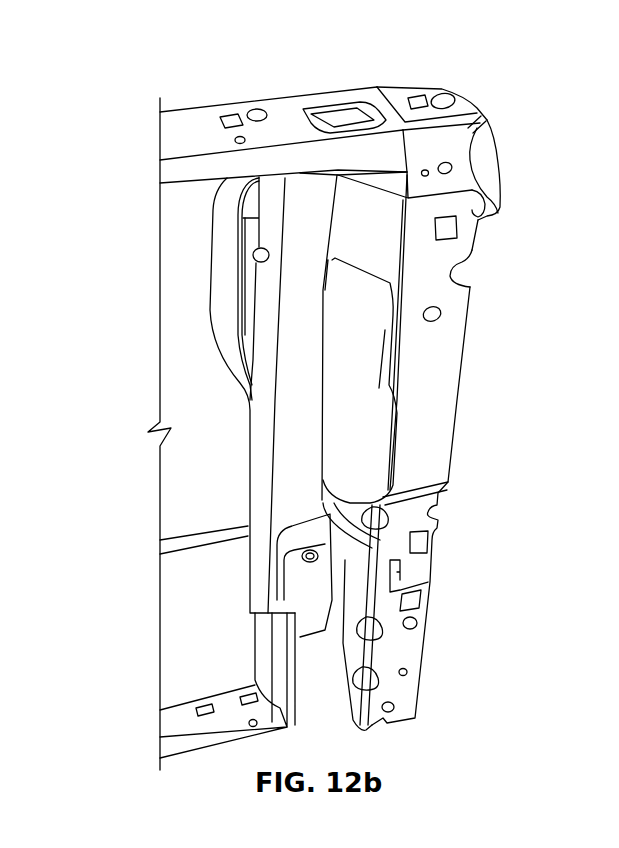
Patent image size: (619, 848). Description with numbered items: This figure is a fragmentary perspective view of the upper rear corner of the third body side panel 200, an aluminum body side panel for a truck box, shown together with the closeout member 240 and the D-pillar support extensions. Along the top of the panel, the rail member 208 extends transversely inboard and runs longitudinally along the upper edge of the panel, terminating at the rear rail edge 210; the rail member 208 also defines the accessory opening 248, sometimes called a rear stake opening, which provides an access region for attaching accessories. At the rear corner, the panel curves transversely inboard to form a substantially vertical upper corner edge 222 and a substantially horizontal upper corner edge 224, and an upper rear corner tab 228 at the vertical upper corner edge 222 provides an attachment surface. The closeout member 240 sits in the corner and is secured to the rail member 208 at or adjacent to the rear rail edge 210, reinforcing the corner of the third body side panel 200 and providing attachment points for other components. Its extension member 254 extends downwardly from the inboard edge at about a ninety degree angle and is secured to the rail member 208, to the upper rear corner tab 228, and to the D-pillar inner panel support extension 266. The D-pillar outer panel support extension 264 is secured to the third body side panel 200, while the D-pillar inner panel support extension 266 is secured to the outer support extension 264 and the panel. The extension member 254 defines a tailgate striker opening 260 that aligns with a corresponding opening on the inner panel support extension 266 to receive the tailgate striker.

The third body side panel 200 is at (187, 470).
The rail member 208 is at (192, 118).
The rear rail edge 210 is at (397, 102).
The vertical upper corner edge 222 is at (508, 172).
The horizontal upper corner edge 224 is at (510, 125).
The upper rear corner tab 228 is at (481, 170).
The closeout member 240 is at (421, 92).
The accessory opening 248 is at (322, 108).
The extension member 254 is at (482, 203).
The tailgate striker opening 260 is at (457, 237).
The D-pillar outer panel support extension 264 is at (250, 288).
The D-pillar inner panel support extension 266 is at (440, 430).